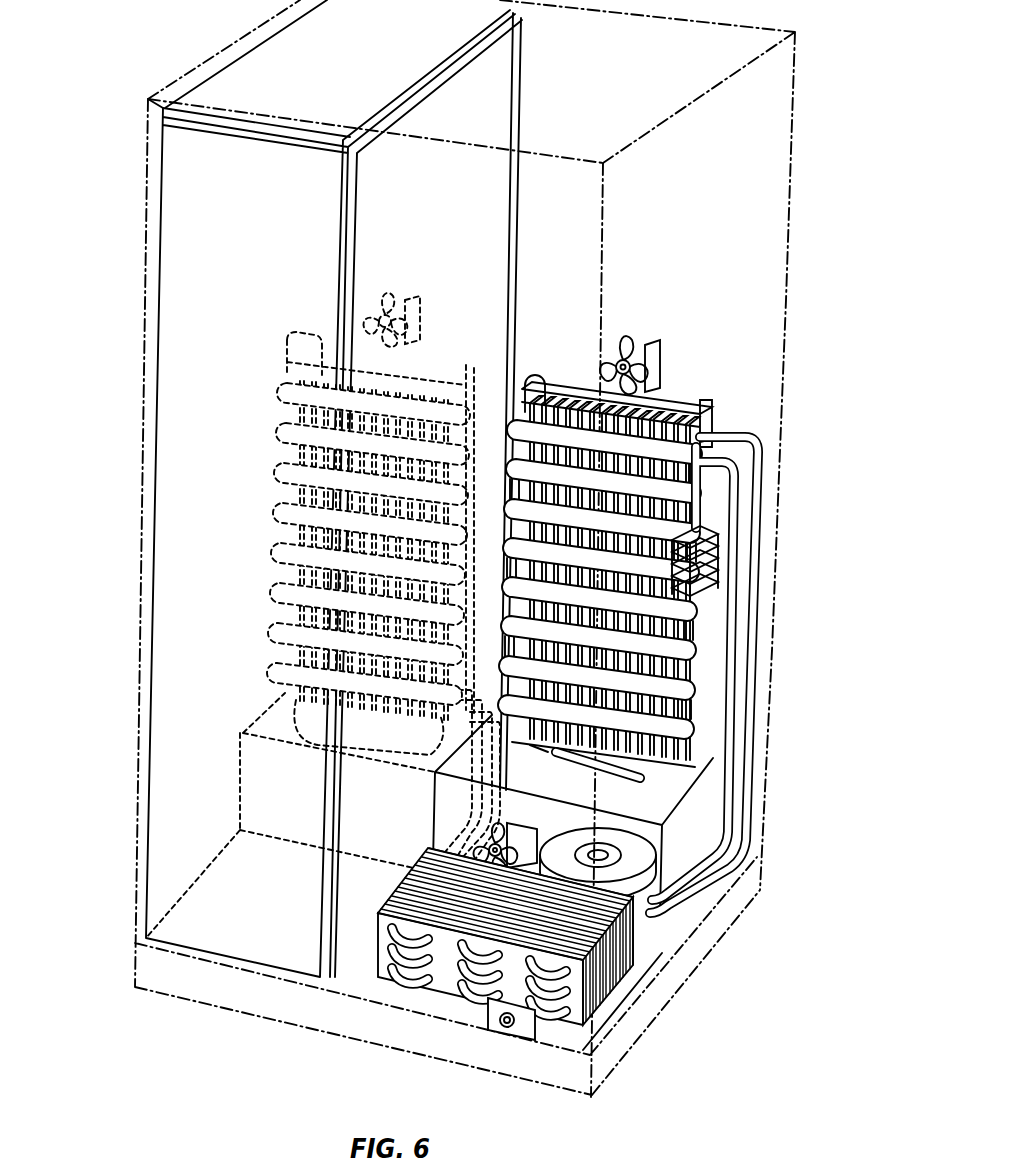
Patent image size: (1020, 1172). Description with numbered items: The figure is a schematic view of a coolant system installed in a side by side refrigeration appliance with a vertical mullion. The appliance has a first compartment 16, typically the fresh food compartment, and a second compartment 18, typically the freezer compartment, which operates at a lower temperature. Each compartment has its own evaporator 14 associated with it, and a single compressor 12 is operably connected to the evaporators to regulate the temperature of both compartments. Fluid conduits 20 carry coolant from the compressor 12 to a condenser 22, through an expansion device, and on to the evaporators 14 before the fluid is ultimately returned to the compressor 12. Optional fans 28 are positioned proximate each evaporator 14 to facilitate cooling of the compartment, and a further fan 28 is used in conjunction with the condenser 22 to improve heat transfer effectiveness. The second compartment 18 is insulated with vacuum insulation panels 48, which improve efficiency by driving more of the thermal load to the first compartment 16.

The compressor 12 is at (633, 850).
The evaporator 14 is at (283, 398).
The first compartment 16 is at (547, 284).
The second compartment 18 is at (203, 632).
The fluid conduits 20 is at (735, 560).
The condenser 22 is at (640, 948).
The fans 28 is at (367, 318).
The vacuum insulation panels 48 is at (361, 70).